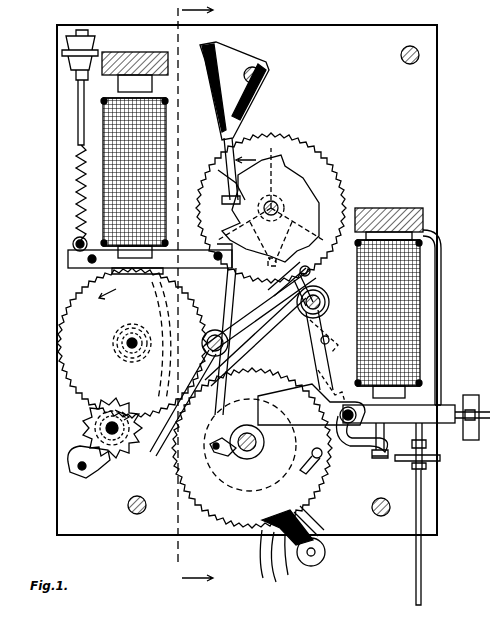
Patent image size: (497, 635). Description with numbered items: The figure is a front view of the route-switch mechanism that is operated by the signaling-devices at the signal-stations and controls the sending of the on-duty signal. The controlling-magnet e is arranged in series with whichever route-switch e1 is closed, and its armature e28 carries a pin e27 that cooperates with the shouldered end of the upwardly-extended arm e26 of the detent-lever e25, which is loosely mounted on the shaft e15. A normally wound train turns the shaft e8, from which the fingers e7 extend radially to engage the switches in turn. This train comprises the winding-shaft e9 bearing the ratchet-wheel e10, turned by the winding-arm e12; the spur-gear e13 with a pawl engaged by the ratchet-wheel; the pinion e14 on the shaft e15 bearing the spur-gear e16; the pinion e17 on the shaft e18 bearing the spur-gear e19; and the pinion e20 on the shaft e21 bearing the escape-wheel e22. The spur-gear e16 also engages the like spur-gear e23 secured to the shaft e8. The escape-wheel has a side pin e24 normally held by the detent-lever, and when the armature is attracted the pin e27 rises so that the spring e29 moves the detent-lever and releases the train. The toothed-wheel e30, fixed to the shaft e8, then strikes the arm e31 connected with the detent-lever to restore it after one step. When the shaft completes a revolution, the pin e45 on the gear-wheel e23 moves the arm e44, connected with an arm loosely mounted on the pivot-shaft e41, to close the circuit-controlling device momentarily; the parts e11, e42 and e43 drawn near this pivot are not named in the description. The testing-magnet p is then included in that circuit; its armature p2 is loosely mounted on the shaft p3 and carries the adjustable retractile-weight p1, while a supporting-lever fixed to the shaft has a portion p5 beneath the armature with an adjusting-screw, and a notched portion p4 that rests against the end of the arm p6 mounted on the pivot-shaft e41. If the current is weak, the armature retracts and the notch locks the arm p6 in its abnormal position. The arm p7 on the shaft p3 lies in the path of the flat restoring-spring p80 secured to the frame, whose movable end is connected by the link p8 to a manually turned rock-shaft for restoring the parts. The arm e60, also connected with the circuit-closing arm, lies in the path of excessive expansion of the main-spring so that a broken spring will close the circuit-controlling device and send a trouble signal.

The controlling-magnet e is at (170, 146).
The route-switch e1 is at (208, 113).
The fingers e7 is at (296, 183).
The shaft e8 is at (271, 200).
The winding-shaft e9 is at (240, 456).
The ratchet-wheel e10 is at (203, 492).
The pin e11 is at (330, 341).
The winding-arm e12 is at (326, 551).
The spur-gear e13 is at (246, 534).
The pinion e14 is at (183, 403).
The shaft e15 is at (202, 343).
The spur-gear e16 is at (238, 334).
The pinion e17 is at (126, 330).
The shaft e18 is at (122, 345).
The spur-gear e19 is at (60, 323).
The pinion e20 is at (100, 428).
The shaft e21 is at (112, 429).
The escape-wheel e22 is at (100, 476).
The spur-gear e23 is at (345, 204).
The pin e24 is at (123, 428).
The detent-lever e25 is at (130, 508).
The arm e26 is at (167, 341).
The pin e27 is at (196, 252).
The armature e28 is at (80, 270).
The spring e29 is at (250, 440).
The toothed-wheel e30 is at (218, 172).
The arm e31 is at (312, 270).
The pivot-shaft e41 is at (330, 300).
The lever end e42 is at (331, 384).
The dashed lever e43 is at (335, 336).
The arm e44 is at (325, 285).
The pin e45 is at (284, 278).
The arm e60 is at (268, 338).
The testing-magnet p is at (425, 316).
The retractile-weight p1 is at (470, 440).
The armature p2 is at (440, 400).
The shaft p3 is at (348, 406).
The portion of supporting-lever p4 is at (311, 454).
The portion of supporting-lever p5 is at (372, 452).
The arm p6 is at (326, 349).
The arm p7 is at (388, 438).
The link p8 is at (422, 565).
The flat restoring-spring p80 is at (408, 466).